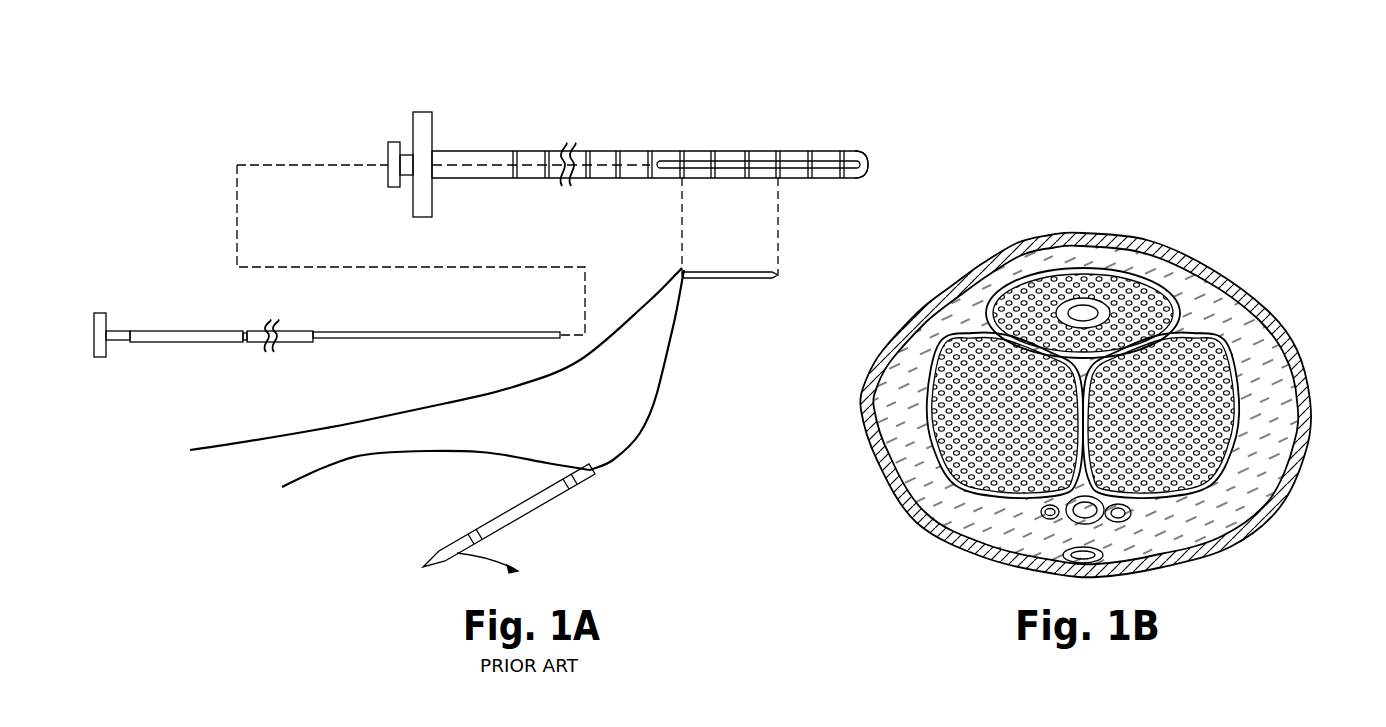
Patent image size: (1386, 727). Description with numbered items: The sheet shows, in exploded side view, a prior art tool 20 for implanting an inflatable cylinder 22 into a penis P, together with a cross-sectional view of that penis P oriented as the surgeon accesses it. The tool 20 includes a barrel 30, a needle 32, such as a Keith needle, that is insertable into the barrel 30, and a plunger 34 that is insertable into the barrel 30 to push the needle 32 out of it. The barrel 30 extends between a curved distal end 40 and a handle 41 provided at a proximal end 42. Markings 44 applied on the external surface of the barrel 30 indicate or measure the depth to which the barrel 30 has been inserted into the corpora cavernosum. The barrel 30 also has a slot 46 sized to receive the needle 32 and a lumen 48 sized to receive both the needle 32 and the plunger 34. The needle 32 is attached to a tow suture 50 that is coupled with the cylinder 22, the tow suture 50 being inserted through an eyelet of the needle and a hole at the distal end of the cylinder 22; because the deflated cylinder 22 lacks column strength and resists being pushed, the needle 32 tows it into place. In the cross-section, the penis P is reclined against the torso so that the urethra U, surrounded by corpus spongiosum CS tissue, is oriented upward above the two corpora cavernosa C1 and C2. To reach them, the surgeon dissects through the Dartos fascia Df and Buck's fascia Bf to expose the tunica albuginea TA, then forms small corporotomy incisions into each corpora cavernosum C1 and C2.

In FIG. 1A, the tool 20 is at (205, 92).
In FIG. 1A, the inflatable cylinder 22 is at (546, 500).
In FIG. 1A, the barrel 30 is at (822, 152).
In FIG. 1A, the needle 32 is at (745, 278).
In FIG. 1A, the plunger 34 is at (174, 330).
In FIG. 1A, the curved distal end 40 is at (868, 172).
In FIG. 1A, the handle 41 is at (423, 112).
In FIG. 1A, the proximal end 42 is at (393, 142).
In FIG. 1A, the markings 44 is at (618, 151).
In FIG. 1A, the slot 46 is at (757, 163).
In FIG. 1A, the lumen 48 is at (525, 160).
In FIG. 1A, the tow suture 50 is at (467, 398).
In FIG. 1B, the urethra U is at (1082, 312).
In FIG. 1B, the penis P is at (1212, 242).
In FIG. 1B, the corpus spongiosum CS is at (1138, 306).
In FIG. 1B, the corpora cavernosum C1 is at (962, 392).
In FIG. 1B, the corpora cavernosum C2 is at (1195, 390).
In FIG. 1B, the tunica albuginea TA is at (932, 375).
In FIG. 1B, the Buck's fascia Bf is at (925, 475).
In FIG. 1B, the Dartos fascia Df is at (922, 495).